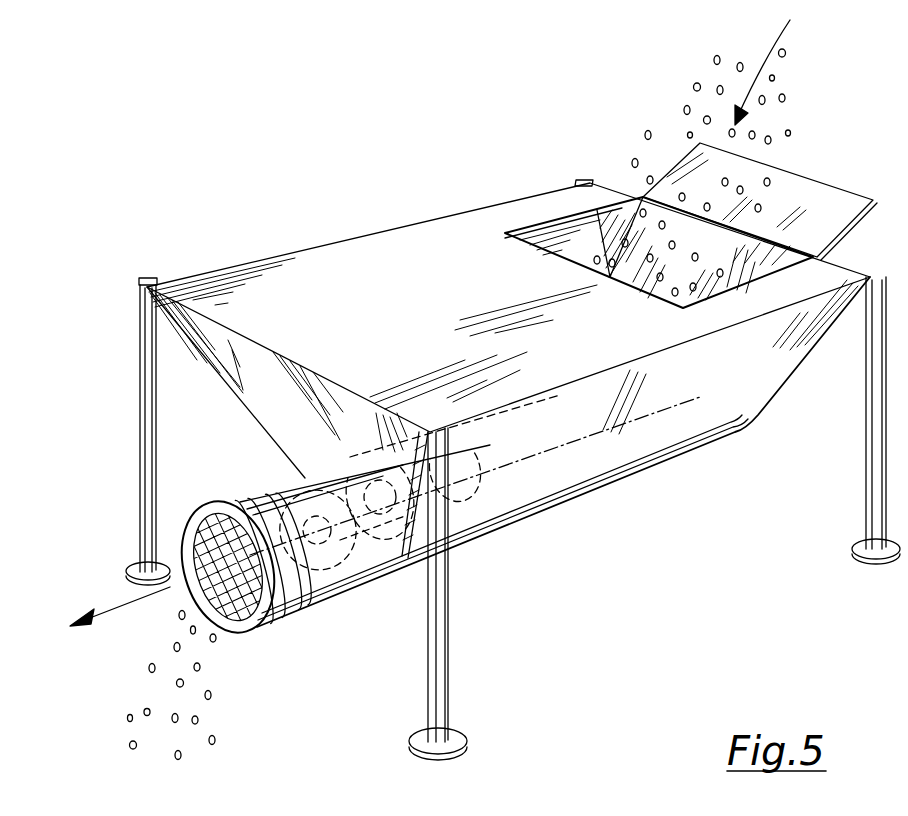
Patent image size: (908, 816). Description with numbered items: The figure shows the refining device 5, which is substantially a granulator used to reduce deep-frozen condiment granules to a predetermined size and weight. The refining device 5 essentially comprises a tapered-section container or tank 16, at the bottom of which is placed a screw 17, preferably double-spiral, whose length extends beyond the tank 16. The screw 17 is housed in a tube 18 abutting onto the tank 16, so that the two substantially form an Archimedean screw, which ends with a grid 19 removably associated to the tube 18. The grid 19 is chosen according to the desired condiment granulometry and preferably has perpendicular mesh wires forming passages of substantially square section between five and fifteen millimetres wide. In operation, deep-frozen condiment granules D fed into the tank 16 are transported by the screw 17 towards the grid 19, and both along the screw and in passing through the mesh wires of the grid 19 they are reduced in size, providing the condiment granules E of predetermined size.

The refining device 5 is at (363, 179).
The tapered-section container or tank 16 is at (743, 380).
The screw 17 is at (357, 593).
The tube 18 is at (303, 600).
The grid 19 is at (253, 562).
The condiment granules D is at (767, 182).
The condiment granules of a predetermined size E is at (152, 668).